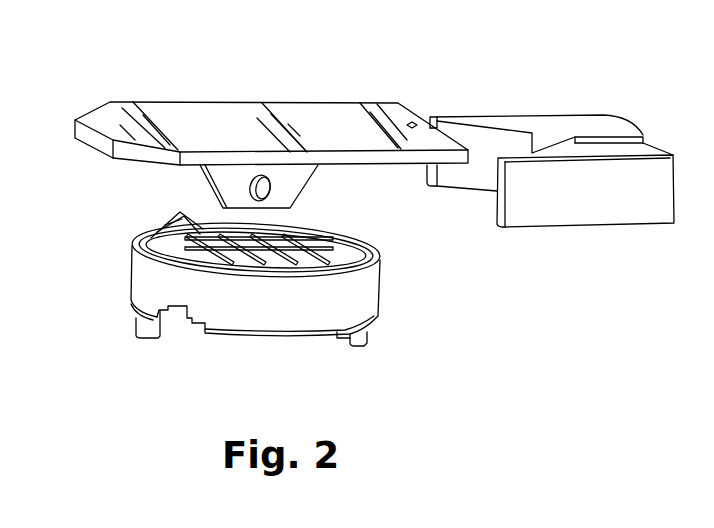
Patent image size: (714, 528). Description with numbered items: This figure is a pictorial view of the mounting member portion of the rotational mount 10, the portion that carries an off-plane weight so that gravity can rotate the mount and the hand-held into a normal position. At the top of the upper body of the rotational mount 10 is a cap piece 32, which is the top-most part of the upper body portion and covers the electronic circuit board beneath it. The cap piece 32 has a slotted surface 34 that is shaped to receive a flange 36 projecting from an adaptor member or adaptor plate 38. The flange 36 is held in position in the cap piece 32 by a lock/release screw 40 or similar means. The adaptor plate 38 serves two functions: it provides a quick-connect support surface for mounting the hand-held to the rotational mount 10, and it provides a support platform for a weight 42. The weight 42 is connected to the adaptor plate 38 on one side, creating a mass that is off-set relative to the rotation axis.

The rotational mount 10 is at (438, 358).
The cap piece 32 is at (368, 291).
The slotted surface 34 is at (257, 250).
The flange 36 is at (293, 183).
The adaptor plate 38 is at (228, 118).
The lock/release screw 40 is at (157, 222).
The weight 42 is at (593, 228).